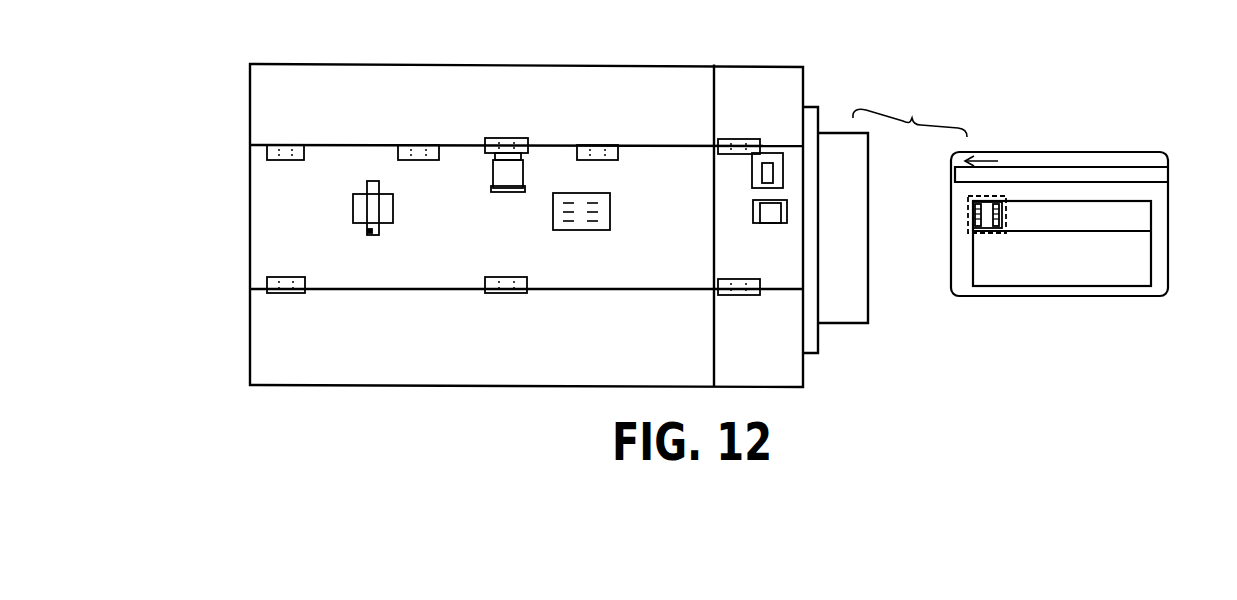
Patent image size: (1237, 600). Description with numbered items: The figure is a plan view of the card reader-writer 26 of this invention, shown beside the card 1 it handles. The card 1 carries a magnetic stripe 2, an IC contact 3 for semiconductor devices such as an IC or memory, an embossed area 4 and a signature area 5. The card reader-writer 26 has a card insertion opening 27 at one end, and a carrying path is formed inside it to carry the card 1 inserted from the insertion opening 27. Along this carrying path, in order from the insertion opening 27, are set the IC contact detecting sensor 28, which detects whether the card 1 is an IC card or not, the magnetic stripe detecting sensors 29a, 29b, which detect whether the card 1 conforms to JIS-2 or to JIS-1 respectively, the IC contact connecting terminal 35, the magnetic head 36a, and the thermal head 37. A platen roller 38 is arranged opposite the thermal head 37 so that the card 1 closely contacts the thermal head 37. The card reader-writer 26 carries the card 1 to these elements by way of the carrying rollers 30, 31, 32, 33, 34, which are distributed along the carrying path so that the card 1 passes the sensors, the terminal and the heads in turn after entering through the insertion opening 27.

The card 1 is at (1122, 152).
The magnetic stripe 2 is at (1162, 177).
The IC contact 3 is at (990, 222).
The embossed area 4 is at (1140, 264).
The signature area 5 is at (1142, 222).
The card reader-writer 26 is at (853, 323).
The card insertion opening 27 is at (868, 201).
The IC contact detecting sensor 28 is at (770, 223).
The magnetic stripe detecting sensor 29a is at (816, 106).
The magnetic stripe detecting sensor 29b is at (770, 163).
The carrying roller 30 is at (736, 139).
The carrying roller 31 is at (596, 145).
The carrying roller 32 is at (508, 138).
The carrying roller 33 is at (417, 145).
The carrying roller 34 is at (281, 145).
The IC contact connecting terminal 35 is at (608, 212).
The magnetic head 36a is at (500, 172).
The thermal head 37 is at (366, 232).
The platen roller 38 is at (393, 207).